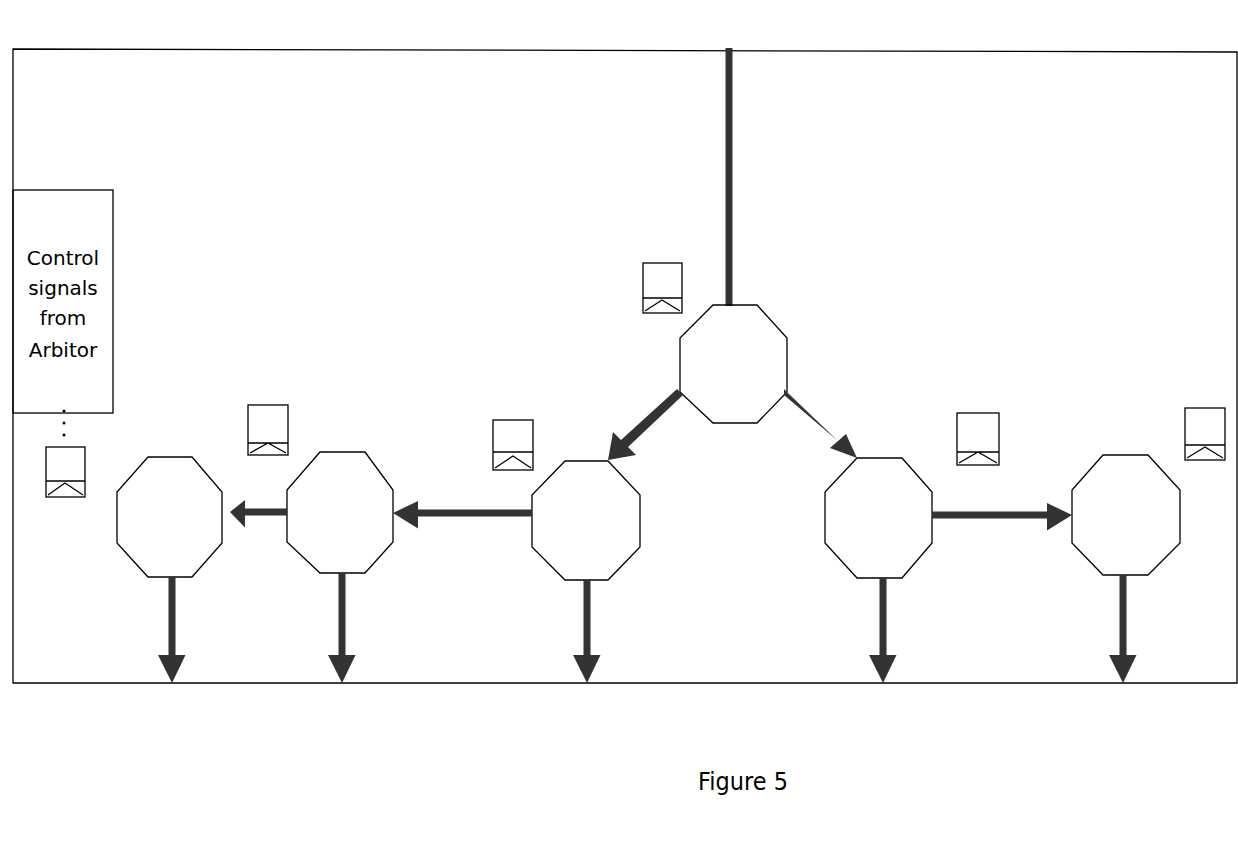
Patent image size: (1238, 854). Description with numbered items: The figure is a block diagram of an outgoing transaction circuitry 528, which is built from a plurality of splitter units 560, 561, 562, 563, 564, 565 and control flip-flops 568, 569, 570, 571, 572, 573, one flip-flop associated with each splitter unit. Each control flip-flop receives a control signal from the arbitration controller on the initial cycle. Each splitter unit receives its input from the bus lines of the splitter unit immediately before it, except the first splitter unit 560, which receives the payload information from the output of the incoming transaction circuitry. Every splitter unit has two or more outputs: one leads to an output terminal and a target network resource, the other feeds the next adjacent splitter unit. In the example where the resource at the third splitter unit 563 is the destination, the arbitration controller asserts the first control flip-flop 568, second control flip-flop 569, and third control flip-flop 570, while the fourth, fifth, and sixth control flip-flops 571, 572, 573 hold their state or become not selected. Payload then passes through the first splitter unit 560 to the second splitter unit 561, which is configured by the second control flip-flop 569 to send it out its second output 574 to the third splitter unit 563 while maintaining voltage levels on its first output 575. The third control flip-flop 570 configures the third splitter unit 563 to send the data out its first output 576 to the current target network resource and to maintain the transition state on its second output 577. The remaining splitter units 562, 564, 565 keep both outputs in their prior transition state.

The outgoing transaction circuitry 528 is at (625, 366).
The first splitter unit 560 is at (733, 364).
The second splitter unit 561 is at (586, 520).
The splitter unit 562 is at (878, 518).
The third splitter unit 563 is at (340, 512).
The splitter unit 564 is at (169, 517).
The splitter unit 565 is at (1126, 515).
The first control flip-flop 568 is at (701, 306).
The second control flip-flop 569 is at (553, 462).
The third control flip-flop 570 is at (308, 450).
The fourth control flip-flop 571 is at (106, 491).
The fifth control flip-flop 572 is at (944, 490).
The sixth control flip-flop 573 is at (1160, 457).
The second output 574 is at (478, 524).
The first output 575 is at (597, 626).
The first output 576 is at (355, 621).
The second output 577 is at (263, 526).